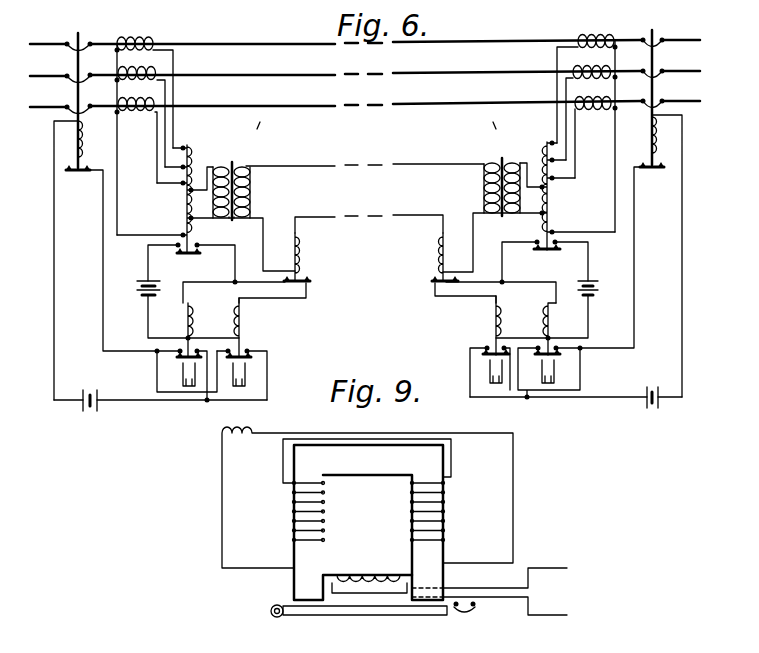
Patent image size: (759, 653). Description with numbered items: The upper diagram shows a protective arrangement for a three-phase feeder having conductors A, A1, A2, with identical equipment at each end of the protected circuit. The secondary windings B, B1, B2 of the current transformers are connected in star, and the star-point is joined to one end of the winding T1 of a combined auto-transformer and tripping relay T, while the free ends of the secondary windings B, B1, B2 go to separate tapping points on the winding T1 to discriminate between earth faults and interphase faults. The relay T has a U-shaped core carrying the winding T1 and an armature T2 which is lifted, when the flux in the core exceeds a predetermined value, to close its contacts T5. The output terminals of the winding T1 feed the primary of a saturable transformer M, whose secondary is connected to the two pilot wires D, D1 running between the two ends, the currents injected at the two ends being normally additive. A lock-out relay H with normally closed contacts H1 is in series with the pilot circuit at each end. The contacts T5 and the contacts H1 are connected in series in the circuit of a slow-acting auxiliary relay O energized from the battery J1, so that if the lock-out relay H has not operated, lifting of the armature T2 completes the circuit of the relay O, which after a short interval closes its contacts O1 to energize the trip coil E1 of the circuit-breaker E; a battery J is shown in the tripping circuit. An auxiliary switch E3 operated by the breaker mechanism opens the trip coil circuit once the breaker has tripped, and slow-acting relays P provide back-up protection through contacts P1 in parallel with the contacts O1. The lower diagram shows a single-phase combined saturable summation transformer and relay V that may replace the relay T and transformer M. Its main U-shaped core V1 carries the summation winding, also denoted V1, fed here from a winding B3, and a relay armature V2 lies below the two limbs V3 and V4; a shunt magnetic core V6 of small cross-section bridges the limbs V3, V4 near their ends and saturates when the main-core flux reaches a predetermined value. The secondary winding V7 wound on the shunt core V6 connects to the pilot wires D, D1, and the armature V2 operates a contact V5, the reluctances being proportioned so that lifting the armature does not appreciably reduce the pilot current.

In FIG. 6, the feeder conductor A is at (297, 43).
In FIG. 6, the feeder conductor A1 is at (292, 74).
In FIG. 6, the feeder conductor A2 is at (292, 105).
In FIG. 6, the current transformer secondary winding B is at (150, 37).
In FIG. 6, the current transformer secondary winding B1 is at (158, 70).
In FIG. 6, the current transformer secondary winding B2 is at (158, 103).
In FIG. 9, the winding B3 is at (367, 497).
In FIG. 6, the circuit-breaker E is at (76, 63).
In FIG. 6, the trip coil E1 is at (683, 140).
In FIG. 6, the auxiliary switch E3 is at (655, 172).
In FIG. 6, the combined auto-transformer and tripping relay T is at (192, 152).
In FIG. 6, the auto-transformer winding T1 is at (575, 206).
In FIG. 6, the armature T2 is at (197, 256).
In FIG. 6, the contacts T5 is at (560, 262).
In FIG. 6, the saturable transformer M is at (234, 164).
In FIG. 6, the pilot wire D is at (318, 165).
In FIG. 9, the pilot wire D is at (546, 567).
In FIG. 6, the pilot wire D1 is at (326, 217).
In FIG. 9, the pilot wire D1 is at (540, 617).
In FIG. 6, the lock-out relay H is at (306, 250).
In FIG. 6, the lock-out relay contacts H1 is at (300, 284).
In FIG. 6, the battery J is at (87, 410).
In FIG. 6, the battery J1 is at (612, 289).
In FIG. 6, the slow-acting relay P is at (186, 327).
In FIG. 6, the contacts P1 is at (588, 368).
In FIG. 6, the slow-acting auxiliary relay O is at (251, 327).
In FIG. 6, the contacts O1 is at (253, 359).
In FIG. 9, the combined saturable summation transformer and relay V is at (368, 522).
In FIG. 9, the main U-shaped core V1 is at (411, 526).
In FIG. 9, the relay armature V2 is at (367, 608).
In FIG. 9, the limb V3 is at (310, 576).
In FIG. 9, the limb V4 is at (428, 572).
In FIG. 9, the contact V5 is at (478, 610).
In FIG. 9, the shunt magnetic core V6 is at (392, 572).
In FIG. 9, the secondary winding V7 is at (363, 574).